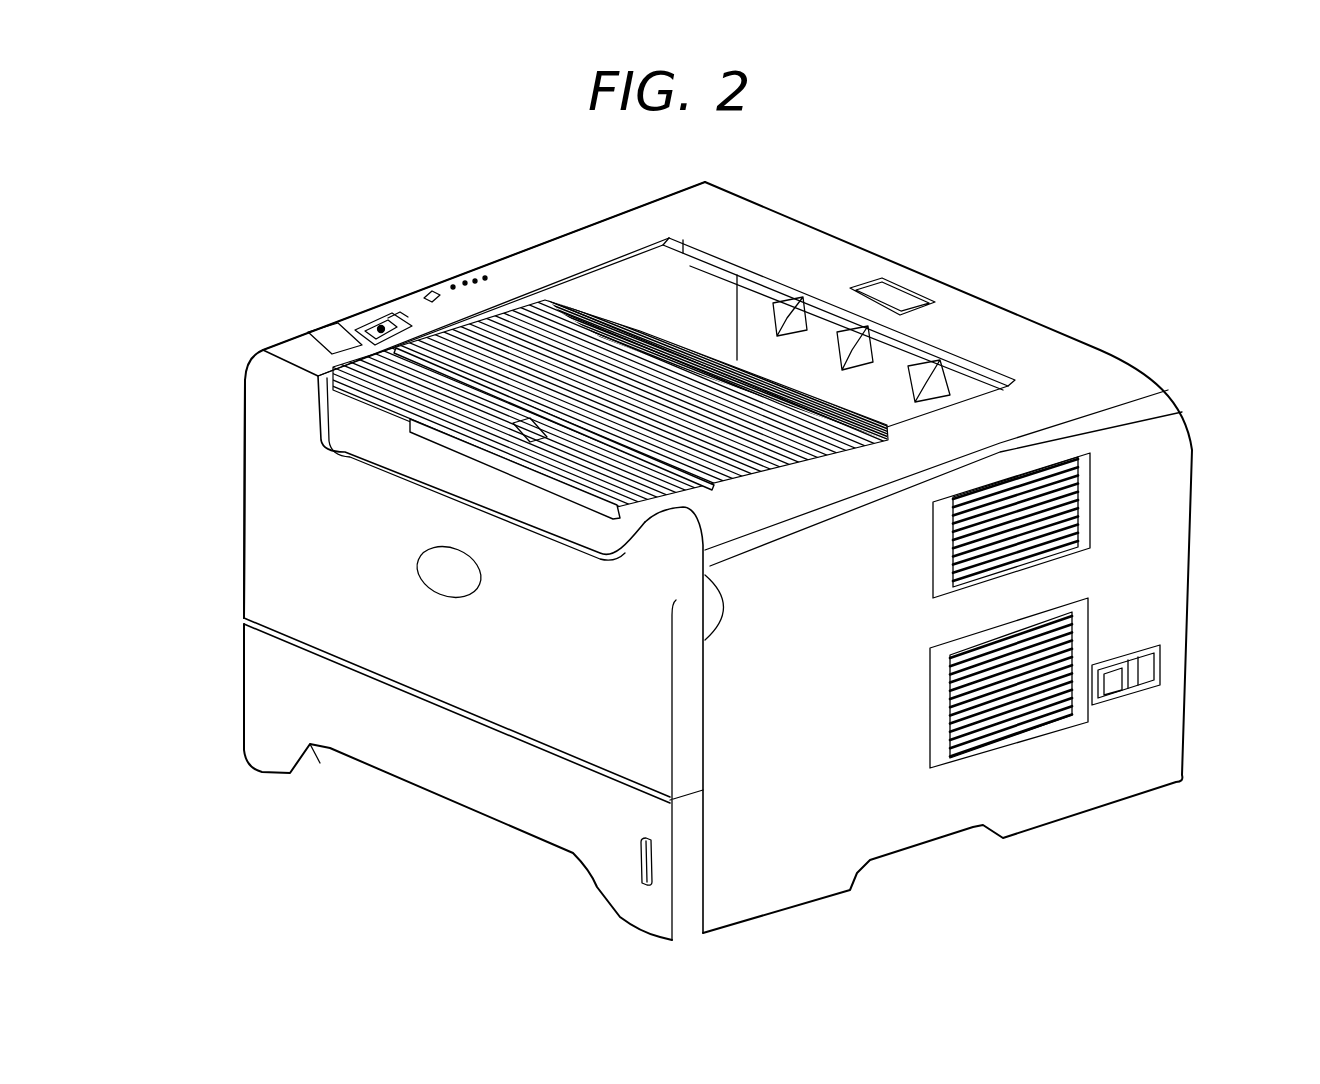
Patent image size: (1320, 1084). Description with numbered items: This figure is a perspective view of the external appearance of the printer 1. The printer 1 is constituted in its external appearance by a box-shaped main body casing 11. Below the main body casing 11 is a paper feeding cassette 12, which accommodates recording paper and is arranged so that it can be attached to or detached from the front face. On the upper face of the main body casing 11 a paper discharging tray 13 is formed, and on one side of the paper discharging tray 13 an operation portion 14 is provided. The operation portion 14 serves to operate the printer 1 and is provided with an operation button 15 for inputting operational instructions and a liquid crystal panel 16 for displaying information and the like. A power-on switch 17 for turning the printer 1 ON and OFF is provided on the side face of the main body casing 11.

The printer 1 is at (986, 260).
The main body casing 11 is at (243, 472).
The paper feeding cassette 12 is at (245, 655).
The paper discharging tray 13 is at (610, 323).
The operation portion 14 is at (438, 258).
The operation button 15 is at (377, 327).
The liquid crystal panel 16 is at (330, 338).
The power-on switch 17 is at (1158, 670).